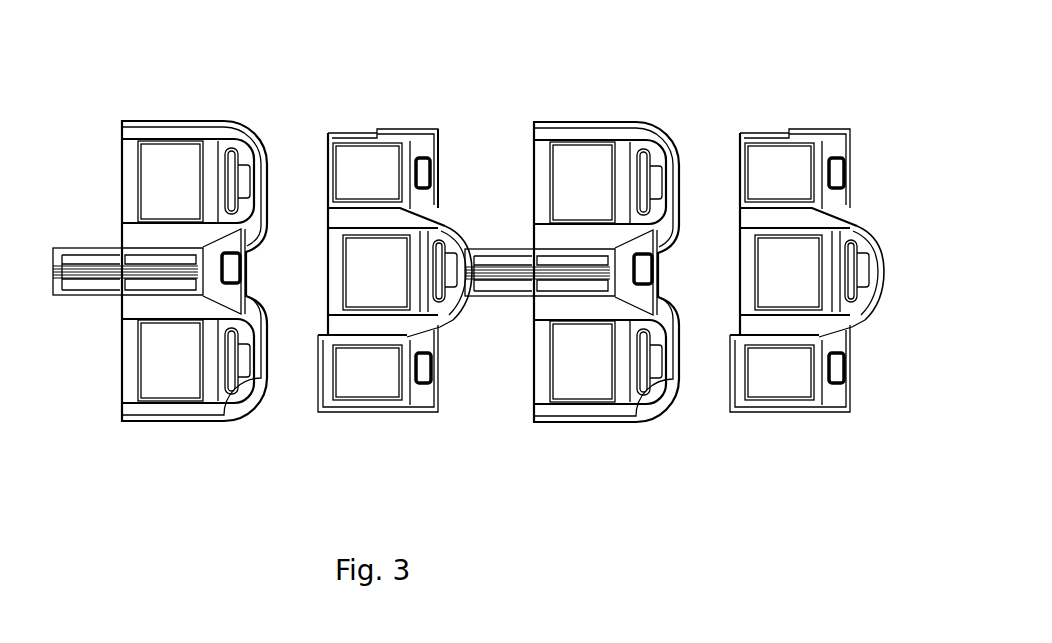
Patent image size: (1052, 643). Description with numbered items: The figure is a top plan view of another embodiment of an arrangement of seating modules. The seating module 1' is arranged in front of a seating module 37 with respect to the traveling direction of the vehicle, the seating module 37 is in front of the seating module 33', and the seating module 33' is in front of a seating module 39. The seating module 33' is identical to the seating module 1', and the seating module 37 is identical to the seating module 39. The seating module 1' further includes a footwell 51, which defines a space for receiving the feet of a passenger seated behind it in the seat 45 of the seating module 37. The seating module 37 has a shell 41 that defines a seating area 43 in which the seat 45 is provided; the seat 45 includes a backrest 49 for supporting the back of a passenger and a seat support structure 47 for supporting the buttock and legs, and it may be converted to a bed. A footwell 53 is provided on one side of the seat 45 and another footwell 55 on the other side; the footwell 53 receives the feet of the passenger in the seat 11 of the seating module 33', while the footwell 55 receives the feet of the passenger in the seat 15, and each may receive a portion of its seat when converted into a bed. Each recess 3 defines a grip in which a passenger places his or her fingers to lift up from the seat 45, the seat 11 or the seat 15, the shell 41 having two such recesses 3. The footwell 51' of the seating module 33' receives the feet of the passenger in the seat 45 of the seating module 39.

The seating module 1' is at (194, 219).
The seating module 33' is at (629, 220).
The seating module 39 is at (833, 120).
The recess 3 is at (241, 262).
The seat 11 is at (145, 183).
The seat 15 is at (162, 363).
The footwell 51 is at (197, 361).
The footwell 51' is at (601, 279).
The seating module 37 is at (403, 127).
The footwell 53 is at (441, 146).
The seat 45 is at (328, 257).
The seat support structure 47 is at (383, 253).
The seating area 43 is at (447, 242).
The backrest 49 is at (438, 287).
The shell 41 is at (430, 342).
The footwell 55 is at (438, 392).